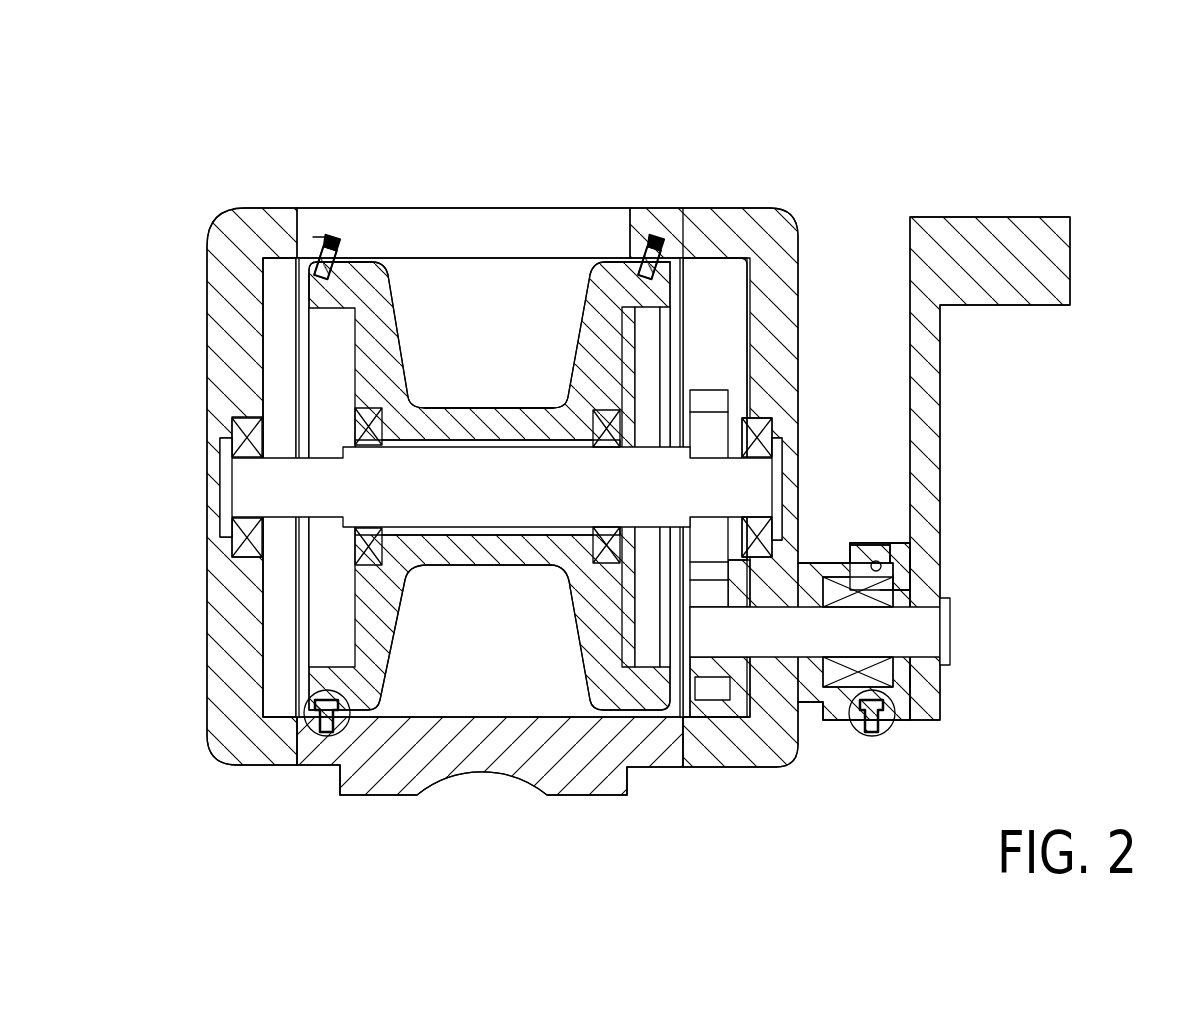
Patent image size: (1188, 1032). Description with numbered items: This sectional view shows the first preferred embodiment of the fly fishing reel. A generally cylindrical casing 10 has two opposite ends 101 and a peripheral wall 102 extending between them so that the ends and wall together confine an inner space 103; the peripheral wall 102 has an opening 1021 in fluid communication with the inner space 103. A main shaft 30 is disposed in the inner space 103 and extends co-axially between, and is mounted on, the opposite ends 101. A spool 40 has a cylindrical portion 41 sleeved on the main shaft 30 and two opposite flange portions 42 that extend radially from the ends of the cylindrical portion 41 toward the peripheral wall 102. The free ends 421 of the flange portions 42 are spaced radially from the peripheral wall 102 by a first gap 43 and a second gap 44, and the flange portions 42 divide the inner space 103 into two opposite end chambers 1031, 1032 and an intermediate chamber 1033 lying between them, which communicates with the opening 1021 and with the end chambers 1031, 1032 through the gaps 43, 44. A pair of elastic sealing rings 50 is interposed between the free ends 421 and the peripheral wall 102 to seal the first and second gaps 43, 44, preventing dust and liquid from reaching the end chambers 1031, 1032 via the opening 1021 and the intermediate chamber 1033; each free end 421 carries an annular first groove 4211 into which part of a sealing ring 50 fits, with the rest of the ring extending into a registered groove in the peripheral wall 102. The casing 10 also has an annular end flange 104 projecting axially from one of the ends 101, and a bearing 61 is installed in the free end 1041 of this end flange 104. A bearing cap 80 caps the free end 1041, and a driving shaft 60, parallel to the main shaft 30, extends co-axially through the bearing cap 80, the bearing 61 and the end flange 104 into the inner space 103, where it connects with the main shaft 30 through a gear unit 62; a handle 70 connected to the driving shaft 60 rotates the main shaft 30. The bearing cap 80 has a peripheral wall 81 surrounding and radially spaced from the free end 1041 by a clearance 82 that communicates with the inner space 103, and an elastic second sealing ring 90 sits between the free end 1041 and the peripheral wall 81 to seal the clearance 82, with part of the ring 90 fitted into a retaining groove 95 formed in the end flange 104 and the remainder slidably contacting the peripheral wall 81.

The casing 10 is at (443, 204).
The opposite ends 101 is at (208, 630).
The peripheral wall 102 is at (300, 215).
The inner space 103 is at (397, 697).
The annular end flange 104 is at (824, 708).
The opening 1021 is at (318, 240).
The end chamber 1031 is at (277, 380).
The end chamber 1032 is at (717, 337).
The intermediate chamber 1033 is at (493, 310).
The free end 1041 is at (845, 568).
The main shaft 30 is at (502, 524).
The spool 40 is at (382, 474).
The cylindrical portion 41 is at (517, 410).
The flange portions 42 is at (390, 273).
The free ends 421 is at (352, 267).
The annular first grooves 4211 is at (320, 277).
The first gap 43 is at (345, 262).
The second gap 44 is at (630, 252).
The elastic sealing rings 50 is at (325, 248).
The driving shaft 60 is at (779, 662).
The bearing 61 is at (886, 670).
The gear unit 62 is at (708, 533).
The handle 70 is at (985, 212).
The bearing cap 80 is at (950, 502).
The peripheral wall 81 is at (876, 540).
The clearance 82 is at (892, 555).
The elastic second sealing ring 90 is at (871, 538).
The retaining groove 95 is at (895, 590).